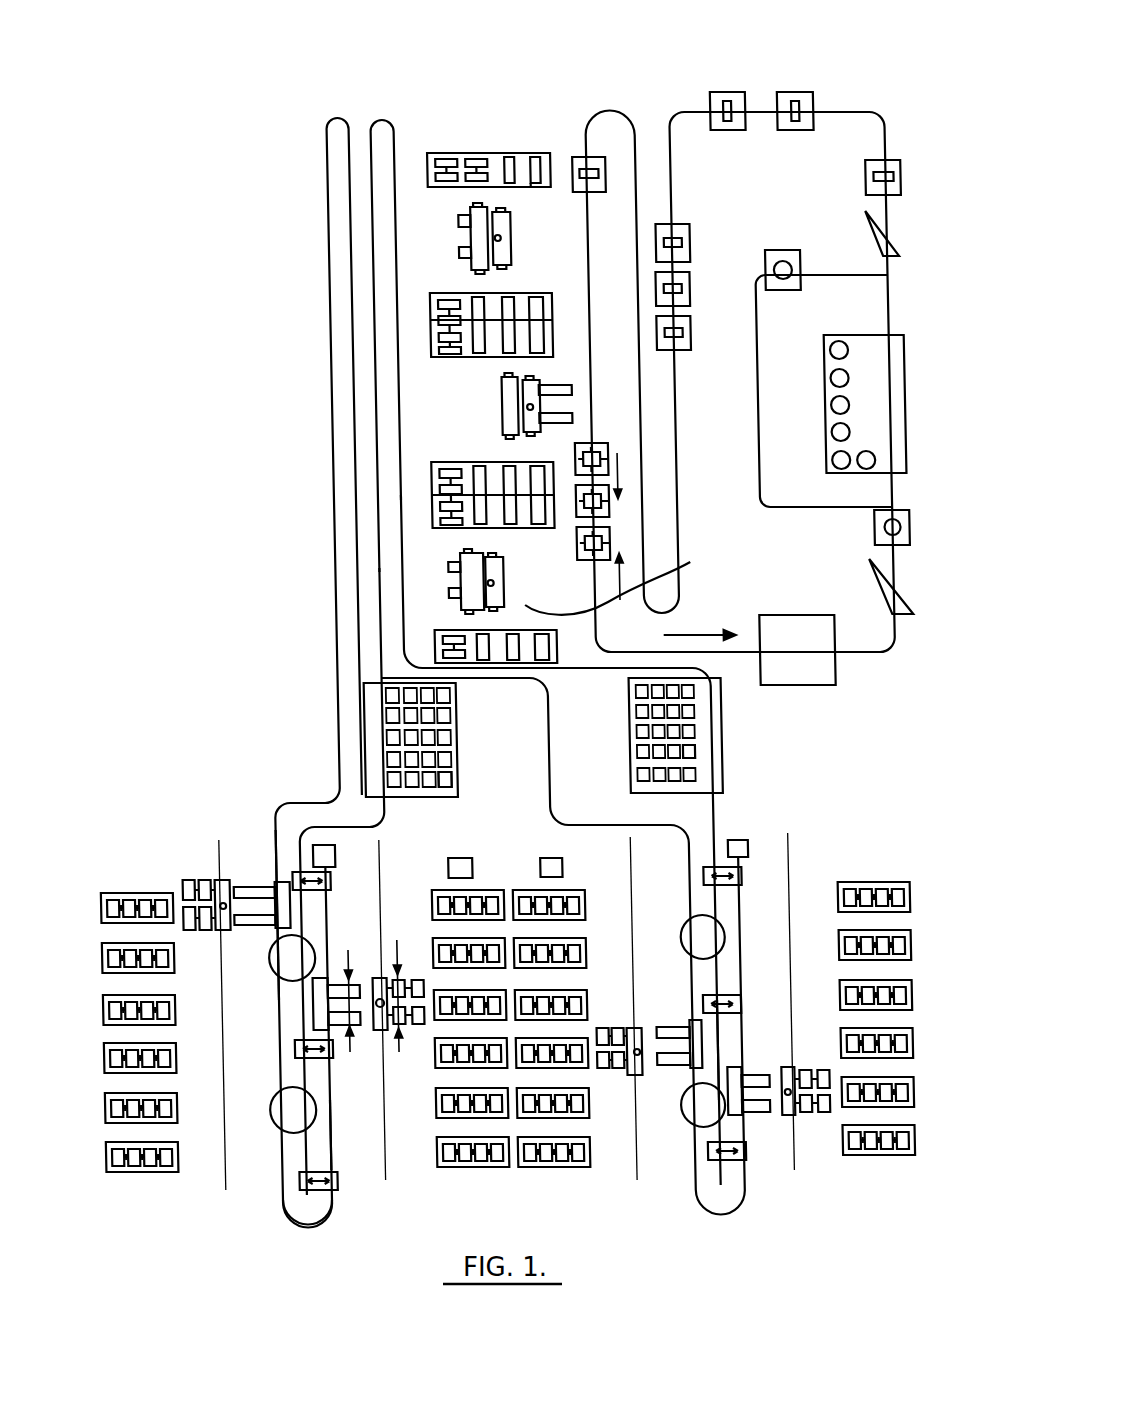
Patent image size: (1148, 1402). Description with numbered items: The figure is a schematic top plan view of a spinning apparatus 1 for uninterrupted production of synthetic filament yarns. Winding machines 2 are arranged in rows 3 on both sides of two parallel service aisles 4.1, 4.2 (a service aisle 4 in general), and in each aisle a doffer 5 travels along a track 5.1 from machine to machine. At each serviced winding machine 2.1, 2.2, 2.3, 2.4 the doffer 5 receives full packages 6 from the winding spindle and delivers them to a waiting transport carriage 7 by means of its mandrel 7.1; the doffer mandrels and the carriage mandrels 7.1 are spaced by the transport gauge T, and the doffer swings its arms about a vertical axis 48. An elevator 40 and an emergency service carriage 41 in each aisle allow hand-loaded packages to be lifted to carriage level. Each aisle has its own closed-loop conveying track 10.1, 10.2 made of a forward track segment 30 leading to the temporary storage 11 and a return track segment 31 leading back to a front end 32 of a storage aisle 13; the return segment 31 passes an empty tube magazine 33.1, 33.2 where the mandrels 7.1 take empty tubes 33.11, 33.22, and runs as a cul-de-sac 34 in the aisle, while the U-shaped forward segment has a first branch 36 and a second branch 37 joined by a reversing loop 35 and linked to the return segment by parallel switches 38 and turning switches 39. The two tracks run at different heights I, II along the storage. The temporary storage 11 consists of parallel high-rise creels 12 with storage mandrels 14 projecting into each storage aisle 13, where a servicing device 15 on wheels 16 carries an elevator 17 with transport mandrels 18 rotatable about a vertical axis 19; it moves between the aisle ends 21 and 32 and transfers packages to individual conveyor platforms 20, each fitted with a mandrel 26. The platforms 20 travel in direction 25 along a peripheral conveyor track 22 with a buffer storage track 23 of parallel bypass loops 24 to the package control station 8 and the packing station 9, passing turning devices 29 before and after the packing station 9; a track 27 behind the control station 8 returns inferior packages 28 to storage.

The spinning apparatus 1 is at (249, 322).
The winding machines 2 is at (864, 884).
The winding machine 2.1 is at (138, 890).
The winding machine 2.2 is at (448, 1018).
The winding machine 2.3 is at (568, 1040).
The winding machine 2.4 is at (834, 1125).
The rows of winding machines 3 is at (815, 896).
The service aisle 4 is at (590, 1052).
The service aisle 4.1 is at (761, 895).
The service aisle 4.2 is at (250, 862).
The doffer 5 is at (218, 932).
The track 5.1 is at (214, 860).
The full packages 6 is at (790, 1068).
The transport carriage 7 is at (686, 1025).
The mandrel 7.1 is at (744, 1076).
The package control station 8 is at (792, 628).
The packing station 9 is at (870, 340).
The conveying track 10.1 is at (548, 750).
The conveying track 10.2 is at (326, 797).
The temporary storage 11 is at (420, 396).
The high-rise creels 12 is at (536, 160).
The storage aisle 13 is at (537, 277).
The storage mandrels 14 is at (516, 168).
The servicing device 15 is at (480, 245).
The wheels 16 is at (537, 197).
The elevator 17 is at (516, 235).
The transport mandrels 18 is at (480, 258).
The vertical axis 19 is at (548, 385).
The individual conveyor platforms 20 is at (616, 175).
The end of storage aisle 21 is at (622, 577).
The peripheral conveyor track 22 is at (597, 440).
The buffer storage track 23 is at (658, 125).
The bypass loops 24 is at (681, 458).
The direction 25 is at (684, 636).
The mandrel 26 is at (682, 236).
The track 27 is at (764, 415).
The packages 28 is at (837, 397).
The turning device 29 is at (876, 218).
The forward track segment 30 is at (323, 896).
The return track segment 31 is at (378, 570).
The front end 32 is at (406, 497).
The empty tube magazine 33.1 is at (721, 732).
The empty tube magazine 33.2 is at (458, 735).
The empty tubes 33.11 is at (689, 756).
The empty tubes 33.22 is at (446, 785).
The cul-de-sac 34 is at (298, 1076).
The reversing loop 35 is at (316, 1226).
The first branch 36 is at (282, 1002).
The second branch 37 is at (322, 1138).
The parallel switches 38 is at (328, 1181).
The turning switches 39 is at (272, 1122).
The elevator 40 is at (742, 842).
The emergency service carriage 41 is at (445, 866).
The vertical axis 48 is at (636, 1058).
The conveying height I is at (338, 636).
The conveying height II is at (358, 370).
The transport gauge T is at (491, 743).